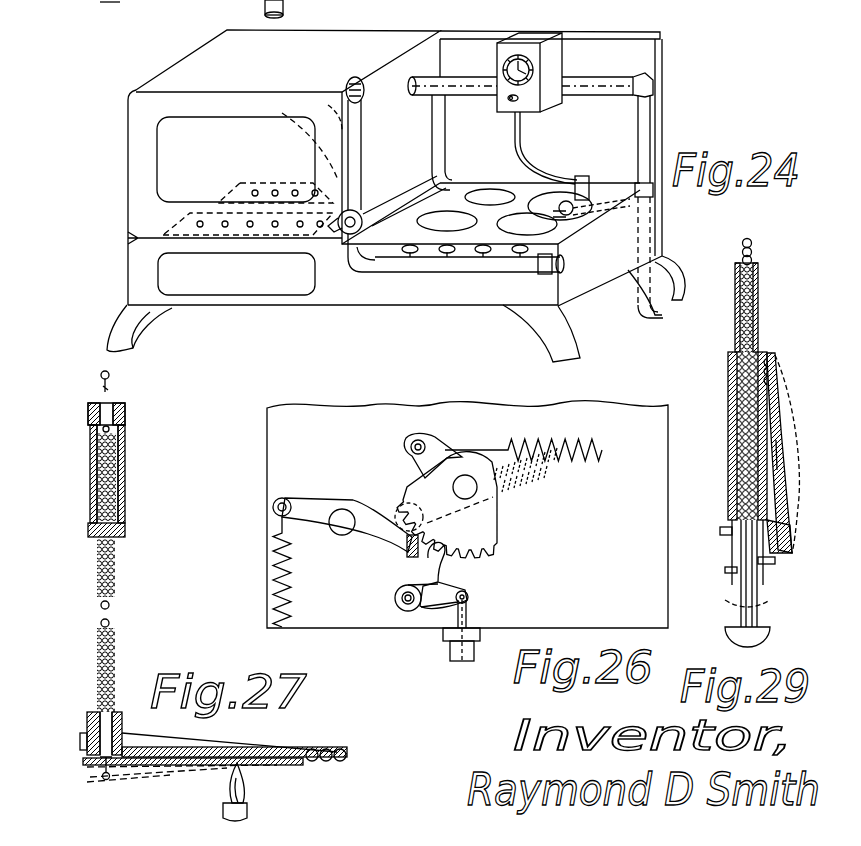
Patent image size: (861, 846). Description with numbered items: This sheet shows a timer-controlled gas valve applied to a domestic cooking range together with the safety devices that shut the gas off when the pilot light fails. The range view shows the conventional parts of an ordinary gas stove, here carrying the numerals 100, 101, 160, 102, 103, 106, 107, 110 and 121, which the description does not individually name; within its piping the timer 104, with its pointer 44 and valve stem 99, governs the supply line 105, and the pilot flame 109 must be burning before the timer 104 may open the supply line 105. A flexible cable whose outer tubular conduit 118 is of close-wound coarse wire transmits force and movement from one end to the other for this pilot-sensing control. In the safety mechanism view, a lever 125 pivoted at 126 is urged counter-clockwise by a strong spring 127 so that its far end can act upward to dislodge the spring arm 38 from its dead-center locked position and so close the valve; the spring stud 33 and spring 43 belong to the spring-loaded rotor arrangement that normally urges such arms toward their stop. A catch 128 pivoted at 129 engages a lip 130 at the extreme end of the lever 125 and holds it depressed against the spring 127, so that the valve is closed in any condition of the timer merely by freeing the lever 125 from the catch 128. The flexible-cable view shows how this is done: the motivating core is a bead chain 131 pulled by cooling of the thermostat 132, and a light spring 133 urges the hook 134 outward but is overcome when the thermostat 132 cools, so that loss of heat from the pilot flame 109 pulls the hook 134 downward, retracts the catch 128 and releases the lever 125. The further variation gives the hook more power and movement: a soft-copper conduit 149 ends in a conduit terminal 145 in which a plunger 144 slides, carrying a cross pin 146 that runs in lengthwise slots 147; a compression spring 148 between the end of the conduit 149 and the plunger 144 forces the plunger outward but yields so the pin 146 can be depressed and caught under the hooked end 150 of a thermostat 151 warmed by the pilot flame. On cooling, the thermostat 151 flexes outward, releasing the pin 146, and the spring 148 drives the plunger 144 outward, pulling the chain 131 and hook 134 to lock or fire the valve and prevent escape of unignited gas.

In FIG. 24, the stove body 100 is at (162, 107).
In FIG. 24, the oven trays 101 is at (248, 212).
In FIG. 24, the oven interior 160 is at (274, 124).
In FIG. 24, the vertical gas pipe 102 is at (360, 63).
In FIG. 24, the connecting pipe 103 is at (362, 209).
In FIG. 24, the timer 104 is at (585, 25).
In FIG. 24, the pointer 44 is at (507, 64).
In FIG. 24, the valve stem 99 is at (509, 99).
In FIG. 24, the supply line 105 is at (433, 131).
In FIG. 24, the front manifold pipe 106 is at (401, 272).
In FIG. 24, the burner rings 107 is at (478, 210).
In FIG. 24, the pilot flame 109 is at (563, 212).
In FIG. 27, the pilot flame 109 is at (247, 791).
In FIG. 24, the burner valves 110 is at (513, 259).
In FIG. 24, the tubular conduit 118 is at (521, 140).
In FIG. 24, the cable fitting 121 is at (598, 184).
In FIG. 26, the spring stud 33 is at (415, 440).
In FIG. 26, the spring arm 38 is at (440, 447).
In FIG. 26, the spring 43 is at (602, 450).
In FIG. 26, the lever 125 is at (381, 541).
In FIG. 26, the pivot 126 is at (348, 510).
In FIG. 26, the spring 127 is at (290, 552).
In FIG. 26, the catch 128 is at (436, 582).
In FIG. 26, the pivot 129 is at (408, 606).
In FIG. 26, the lip 130 is at (421, 560).
In FIG. 27, the chain 131 is at (110, 606).
In FIG. 27, the thermostat 132 is at (70, 767).
In FIG. 27, the spring 133 is at (121, 471).
In FIG. 27, the hook 134 is at (110, 384).
In FIG. 29, the plunger 144 is at (738, 625).
In FIG. 29, the conduit terminal 145 is at (733, 437).
In FIG. 29, the cross pin 146 is at (727, 568).
In FIG. 29, the slots 147 is at (735, 523).
In FIG. 29, the compression spring 148 is at (731, 475).
In FIG. 29, the conduit 149 is at (736, 333).
In FIG. 29, the hooked end 150 is at (786, 558).
In FIG. 29, the thermostat 151 is at (776, 455).